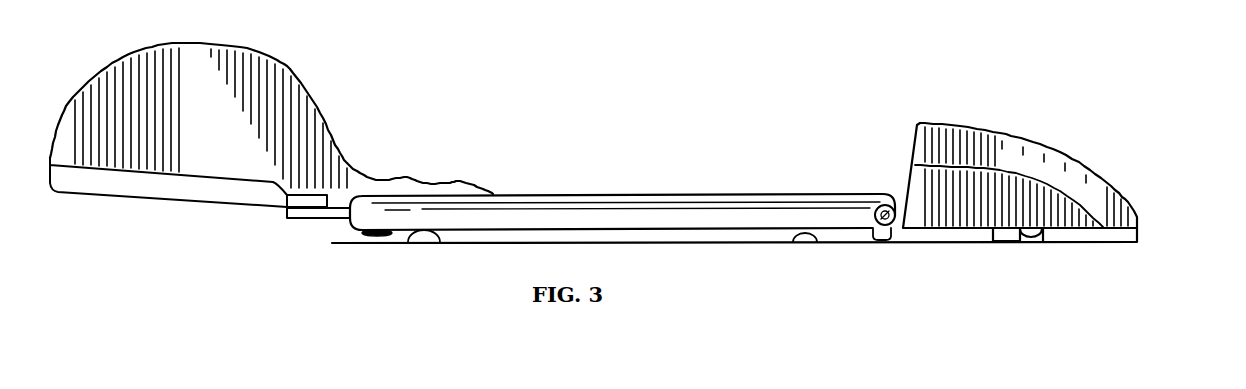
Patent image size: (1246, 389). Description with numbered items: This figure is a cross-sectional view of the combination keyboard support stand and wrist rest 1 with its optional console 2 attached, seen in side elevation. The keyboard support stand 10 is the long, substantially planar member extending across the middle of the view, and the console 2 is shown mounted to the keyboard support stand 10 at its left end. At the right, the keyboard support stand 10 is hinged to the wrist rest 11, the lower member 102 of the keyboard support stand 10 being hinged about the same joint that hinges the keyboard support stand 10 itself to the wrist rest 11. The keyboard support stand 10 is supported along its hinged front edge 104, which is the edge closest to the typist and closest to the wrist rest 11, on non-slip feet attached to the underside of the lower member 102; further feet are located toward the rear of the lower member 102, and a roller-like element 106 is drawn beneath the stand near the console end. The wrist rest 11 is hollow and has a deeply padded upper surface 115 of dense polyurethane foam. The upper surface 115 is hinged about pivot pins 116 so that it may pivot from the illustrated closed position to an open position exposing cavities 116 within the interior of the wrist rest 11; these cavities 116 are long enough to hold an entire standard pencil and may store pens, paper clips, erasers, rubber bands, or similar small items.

The combination keyboard support stand and wrist rest 1 is at (1044, 154).
The console 2 is at (295, 89).
The keyboard support stand 10 is at (666, 190).
The wrist rest 11 is at (1093, 178).
The lower member 102 is at (890, 230).
The hinged front edge 104 is at (806, 237).
The roller 106 is at (435, 238).
The upper surface 115 is at (985, 125).
The pivot pins 116 is at (1023, 190).